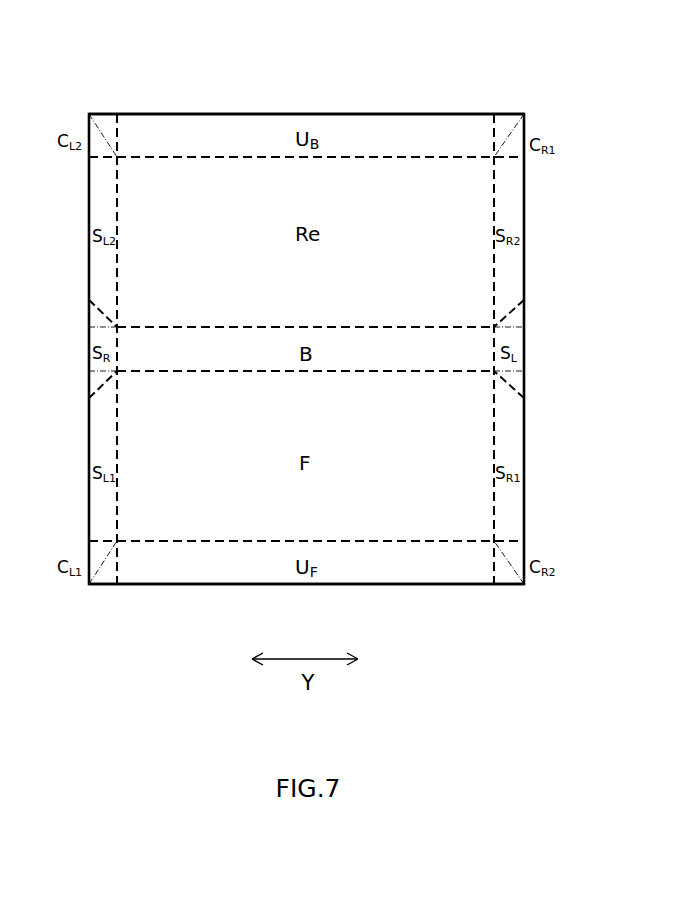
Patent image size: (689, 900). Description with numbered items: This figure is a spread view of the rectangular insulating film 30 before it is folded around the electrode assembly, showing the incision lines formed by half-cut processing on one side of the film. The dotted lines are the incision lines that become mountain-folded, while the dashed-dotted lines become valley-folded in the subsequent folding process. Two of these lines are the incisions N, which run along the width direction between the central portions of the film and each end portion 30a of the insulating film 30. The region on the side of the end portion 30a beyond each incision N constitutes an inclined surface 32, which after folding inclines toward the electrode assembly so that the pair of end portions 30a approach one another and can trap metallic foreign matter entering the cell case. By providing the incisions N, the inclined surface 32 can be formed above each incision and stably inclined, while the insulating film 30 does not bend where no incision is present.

The insulating film 30 is at (466, 92).
The end portion of the insulating film 30a is at (176, 114).
The inclined surface 32 is at (371, 136).
The incision N is at (183, 160).